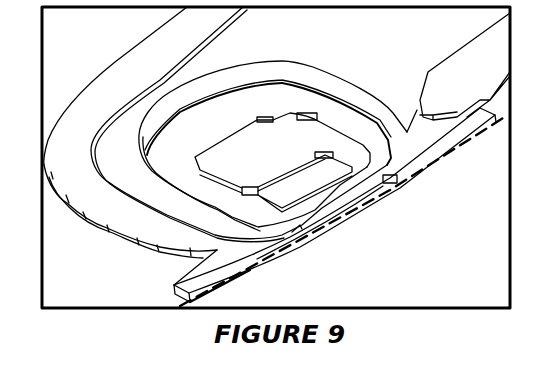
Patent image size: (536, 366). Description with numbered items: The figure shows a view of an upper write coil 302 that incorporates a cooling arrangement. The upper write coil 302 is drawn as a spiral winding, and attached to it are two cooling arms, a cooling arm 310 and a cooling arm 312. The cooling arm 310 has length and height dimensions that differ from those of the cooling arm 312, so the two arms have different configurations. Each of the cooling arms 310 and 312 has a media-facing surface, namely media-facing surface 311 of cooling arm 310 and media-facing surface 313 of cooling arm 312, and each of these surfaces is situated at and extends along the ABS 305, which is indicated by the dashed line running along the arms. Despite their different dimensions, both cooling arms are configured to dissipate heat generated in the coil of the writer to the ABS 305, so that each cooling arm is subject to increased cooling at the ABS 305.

The upper write coil 302 is at (282, 60).
The ABS 305 is at (330, 223).
The cooling arm 310 is at (195, 272).
The media-facing surface 311 is at (226, 276).
The cooling arm 312 is at (462, 127).
The media-facing surface 313 is at (452, 152).